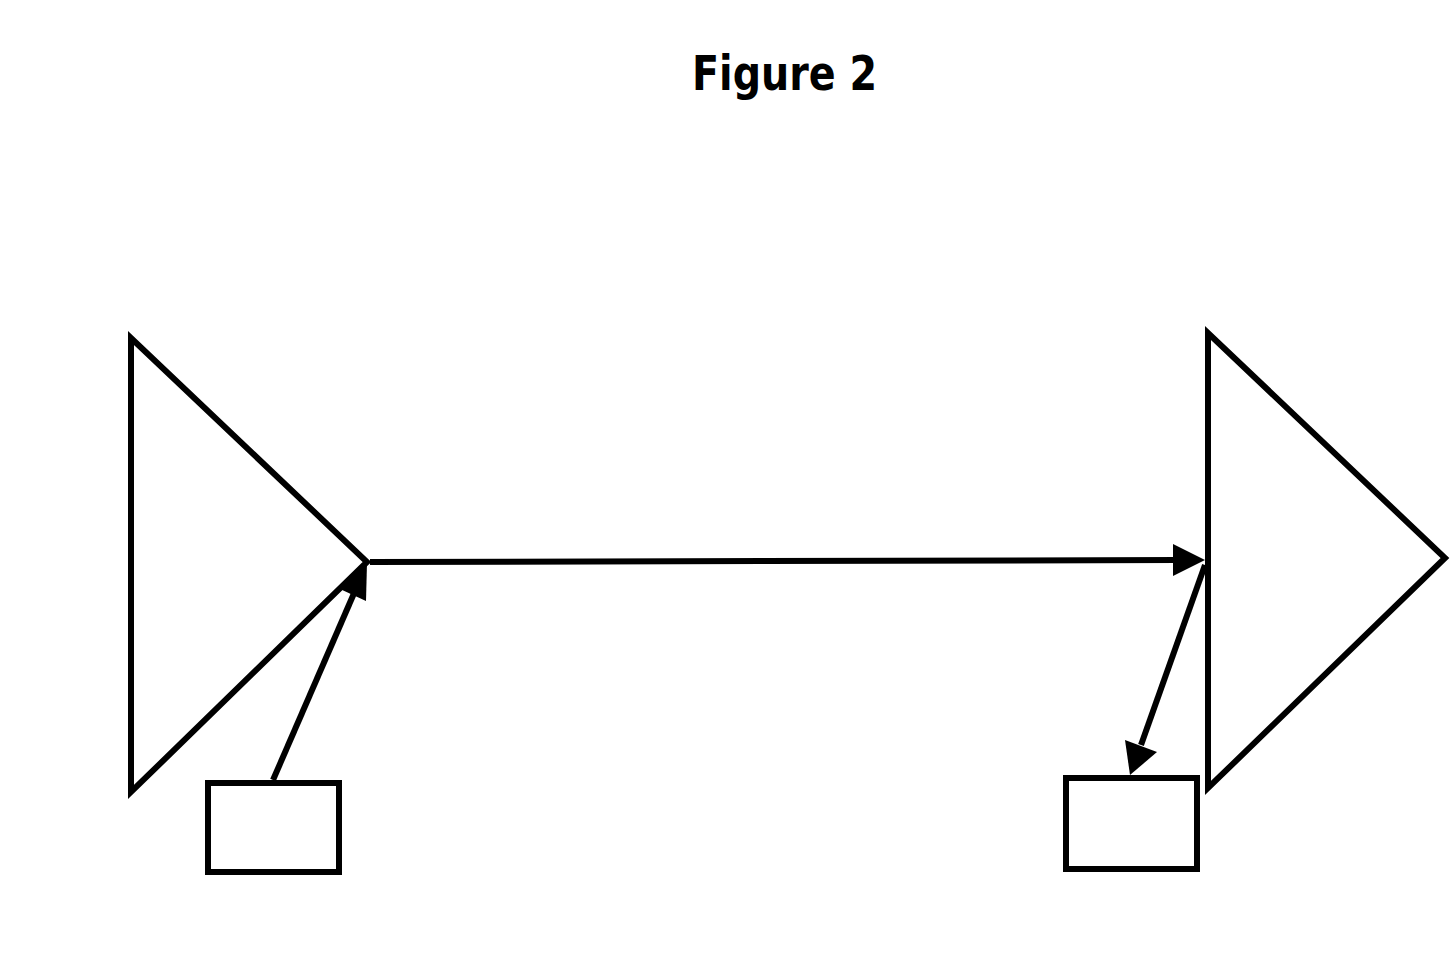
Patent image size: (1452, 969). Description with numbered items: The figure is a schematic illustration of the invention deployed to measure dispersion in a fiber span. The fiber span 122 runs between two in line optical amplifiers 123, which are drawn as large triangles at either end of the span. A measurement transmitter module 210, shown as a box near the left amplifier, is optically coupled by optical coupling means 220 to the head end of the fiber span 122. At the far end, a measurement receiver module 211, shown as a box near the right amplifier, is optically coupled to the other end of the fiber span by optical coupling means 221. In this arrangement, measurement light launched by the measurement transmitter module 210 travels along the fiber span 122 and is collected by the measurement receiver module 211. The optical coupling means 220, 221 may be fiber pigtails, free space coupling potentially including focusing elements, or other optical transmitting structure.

The fiber span 122 is at (787, 539).
The in line optical amplifiers 123 is at (788, 562).
The measurement transmitter module 210 is at (273, 827).
The measurement receiver module 211 is at (1131, 823).
The optical coupling means 220 is at (333, 671).
The optical coupling means 221 is at (1133, 670).